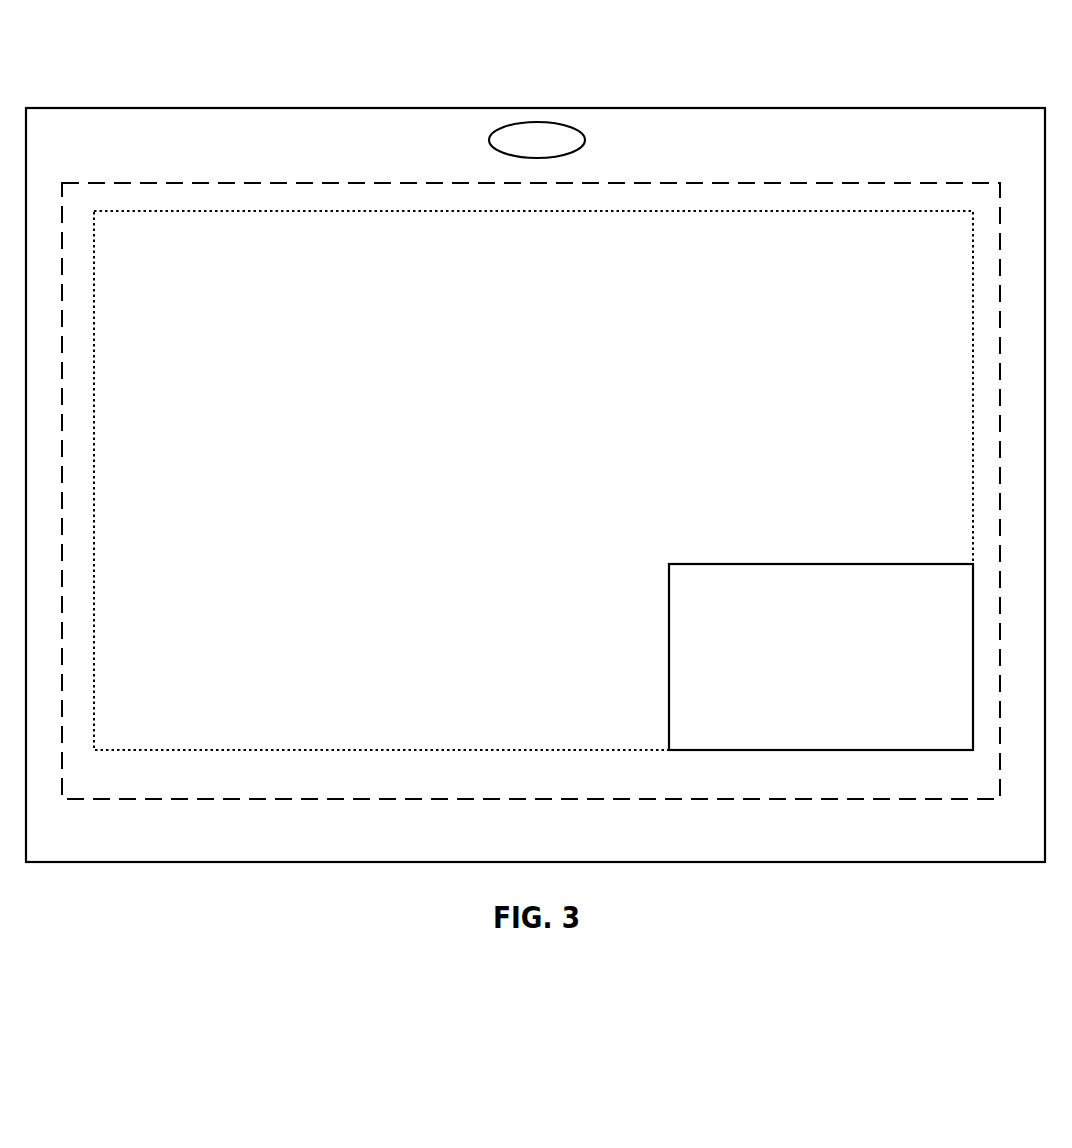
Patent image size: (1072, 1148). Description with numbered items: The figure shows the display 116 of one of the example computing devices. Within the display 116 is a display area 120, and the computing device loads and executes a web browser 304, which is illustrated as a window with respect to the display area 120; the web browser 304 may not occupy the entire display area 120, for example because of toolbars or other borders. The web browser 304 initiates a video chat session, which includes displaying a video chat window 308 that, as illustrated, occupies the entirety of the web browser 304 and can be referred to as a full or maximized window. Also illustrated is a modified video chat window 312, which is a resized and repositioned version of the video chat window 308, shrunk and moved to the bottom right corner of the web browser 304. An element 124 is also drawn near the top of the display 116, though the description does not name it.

The display 116 is at (1005, 862).
The display area 120 is at (533, 800).
The camera 124 is at (537, 122).
The web browser 304 is at (533, 480).
The video chat window 308 is at (422, 211).
The modified video chat window 312 is at (820, 564).